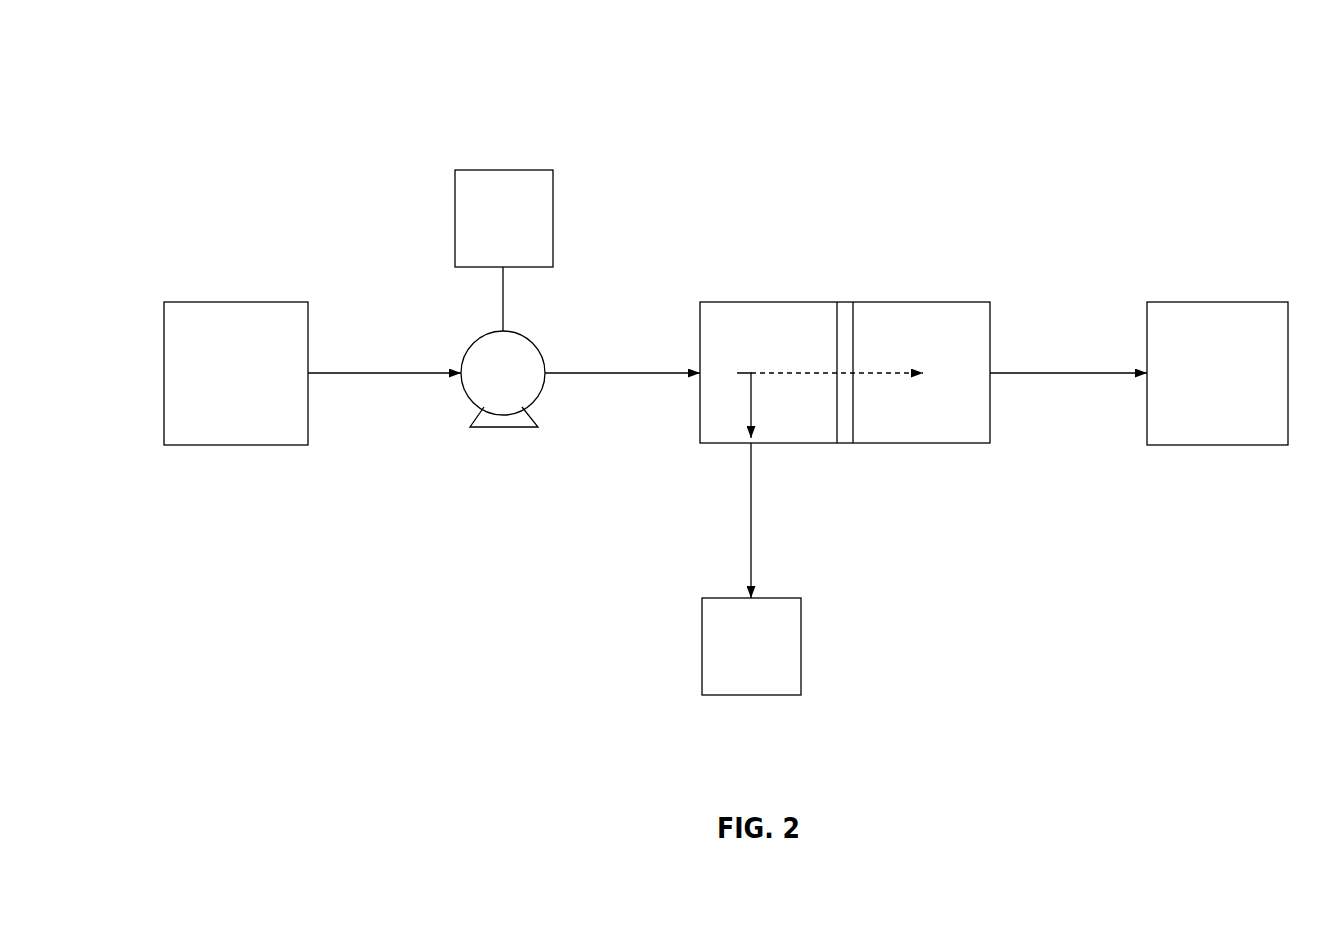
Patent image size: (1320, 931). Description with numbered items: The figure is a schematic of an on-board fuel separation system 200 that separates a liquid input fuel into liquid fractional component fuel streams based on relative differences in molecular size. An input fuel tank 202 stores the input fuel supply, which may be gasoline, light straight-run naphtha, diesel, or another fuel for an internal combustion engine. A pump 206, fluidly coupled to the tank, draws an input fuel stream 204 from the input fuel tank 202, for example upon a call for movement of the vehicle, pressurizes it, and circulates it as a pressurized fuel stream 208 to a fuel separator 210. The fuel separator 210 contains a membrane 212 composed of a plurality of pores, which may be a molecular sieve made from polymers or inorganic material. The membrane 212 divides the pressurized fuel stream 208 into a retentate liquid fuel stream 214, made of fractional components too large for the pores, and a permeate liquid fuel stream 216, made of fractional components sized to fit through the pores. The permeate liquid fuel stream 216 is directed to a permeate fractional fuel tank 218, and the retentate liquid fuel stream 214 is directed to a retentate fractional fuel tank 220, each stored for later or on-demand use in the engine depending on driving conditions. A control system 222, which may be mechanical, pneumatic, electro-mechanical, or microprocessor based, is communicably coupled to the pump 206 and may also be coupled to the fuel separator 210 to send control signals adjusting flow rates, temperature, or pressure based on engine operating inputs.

The on-board fuel separation system 200 is at (1090, 86).
The input fuel tank 202 is at (259, 386).
The input fuel stream 204 is at (385, 377).
The pump 206 is at (526, 386).
The pressurized fuel stream 208 is at (622, 370).
The fuel separator 210 is at (965, 300).
The membrane 212 is at (844, 308).
The retentate liquid fuel stream 214 is at (750, 402).
The permeate liquid fuel stream 216 is at (888, 380).
The permeate fractional fuel tank 218 is at (1241, 386).
The retentate fractional fuel tank 220 is at (774, 658).
The control system 222 is at (527, 228).